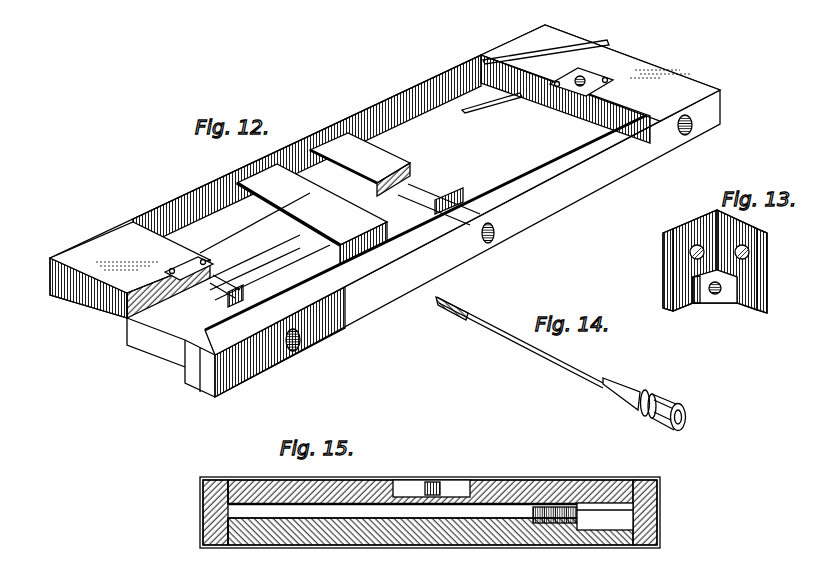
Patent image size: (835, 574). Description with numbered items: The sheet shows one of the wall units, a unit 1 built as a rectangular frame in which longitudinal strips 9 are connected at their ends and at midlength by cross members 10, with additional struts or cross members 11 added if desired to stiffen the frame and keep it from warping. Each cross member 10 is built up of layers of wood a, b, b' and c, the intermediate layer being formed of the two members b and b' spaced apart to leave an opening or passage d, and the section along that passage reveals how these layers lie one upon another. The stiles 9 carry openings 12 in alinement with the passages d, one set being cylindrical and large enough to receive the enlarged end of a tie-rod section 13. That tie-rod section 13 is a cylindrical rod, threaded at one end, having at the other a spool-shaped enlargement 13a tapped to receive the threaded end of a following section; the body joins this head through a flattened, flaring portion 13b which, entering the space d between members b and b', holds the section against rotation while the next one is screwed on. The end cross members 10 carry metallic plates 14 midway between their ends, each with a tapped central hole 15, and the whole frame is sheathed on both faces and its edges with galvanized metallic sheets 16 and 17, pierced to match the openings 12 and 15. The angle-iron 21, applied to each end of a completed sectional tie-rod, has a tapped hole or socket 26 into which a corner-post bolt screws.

In FIG. 12, the unit 1 is at (385, 211).
In FIG. 15, the unit 1 is at (520, 567).
In FIG. 12, the longitudinal strips 9 is at (205, 190).
In FIG. 15, the longitudinal strips 9 is at (200, 480).
In FIG. 12, the cross members 10 is at (694, 69).
In FIG. 12, the struts or cross members 11 is at (312, 214).
In FIG. 12, the openings 12 is at (300, 345).
In FIG. 15, the openings 12 is at (660, 527).
In FIG. 14, the tie-rod section 13 is at (522, 346).
In FIG. 14, the spool-shaped enlargement 13a is at (667, 447).
In FIG. 14, the flattened portion 13b is at (622, 397).
In FIG. 12, the metallic plates 14 is at (183, 270).
In FIG. 15, the metallic plates 14 is at (462, 495).
In FIG. 12, the tapped central hole 15 is at (583, 75).
In FIG. 12, the metallic sheet 16 is at (520, 40).
In FIG. 15, the metallic sheet 16 is at (240, 478).
In FIG. 12, the metallic sheet 17 is at (500, 100).
In FIG. 15, the metallic sheet 17 is at (225, 545).
In FIG. 13, the angle-iron 21 is at (765, 267).
In FIG. 13, the tapped hole or socket 26 is at (717, 297).
In FIG. 12, the layer of wood a is at (117, 303).
In FIG. 15, the layer of wood a is at (357, 492).
In FIG. 12, the member of intermediate layer b is at (245, 287).
In FIG. 12, the member of intermediate layer b' is at (347, 238).
In FIG. 12, the layer of wood c is at (178, 395).
In FIG. 15, the layer of wood c is at (458, 530).
In FIG. 12, the opening or passage d is at (207, 295).
In FIG. 15, the opening or passage d is at (343, 512).